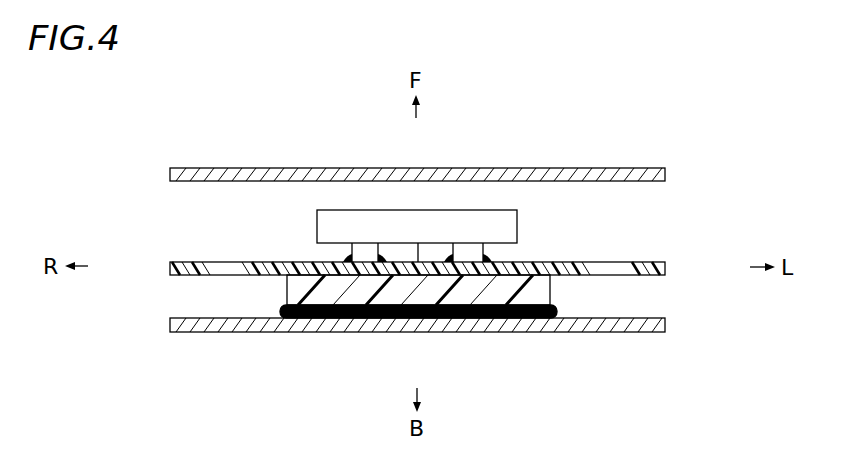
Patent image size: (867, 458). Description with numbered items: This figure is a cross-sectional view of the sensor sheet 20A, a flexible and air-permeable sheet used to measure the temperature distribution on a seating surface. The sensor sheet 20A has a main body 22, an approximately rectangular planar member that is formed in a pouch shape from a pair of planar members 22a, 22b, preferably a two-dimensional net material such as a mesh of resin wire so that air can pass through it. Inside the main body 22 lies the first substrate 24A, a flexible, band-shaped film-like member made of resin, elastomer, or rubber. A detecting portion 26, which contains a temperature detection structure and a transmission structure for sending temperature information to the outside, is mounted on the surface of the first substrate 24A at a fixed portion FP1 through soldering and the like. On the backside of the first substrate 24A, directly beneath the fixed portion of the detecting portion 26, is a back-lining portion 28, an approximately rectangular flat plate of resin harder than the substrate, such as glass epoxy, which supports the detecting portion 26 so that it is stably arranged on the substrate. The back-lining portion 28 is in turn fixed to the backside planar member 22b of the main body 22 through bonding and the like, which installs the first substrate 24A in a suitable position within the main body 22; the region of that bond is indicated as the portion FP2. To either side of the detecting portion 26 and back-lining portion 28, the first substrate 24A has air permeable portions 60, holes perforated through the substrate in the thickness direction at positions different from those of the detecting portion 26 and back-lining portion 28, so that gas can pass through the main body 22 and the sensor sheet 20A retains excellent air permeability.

The sensor sheet 20A is at (558, 162).
The main body 22 is at (735, 165).
The planar member 22a is at (656, 170).
The planar member 22b is at (650, 320).
The first substrate 24A is at (184, 261).
The detecting portion 26 is at (340, 226).
The back-lining portion 28 is at (302, 290).
The air permeable portion 60 is at (218, 262).
The fixed portion FP1 is at (345, 258).
The second fixing portion FP2 is at (560, 310).